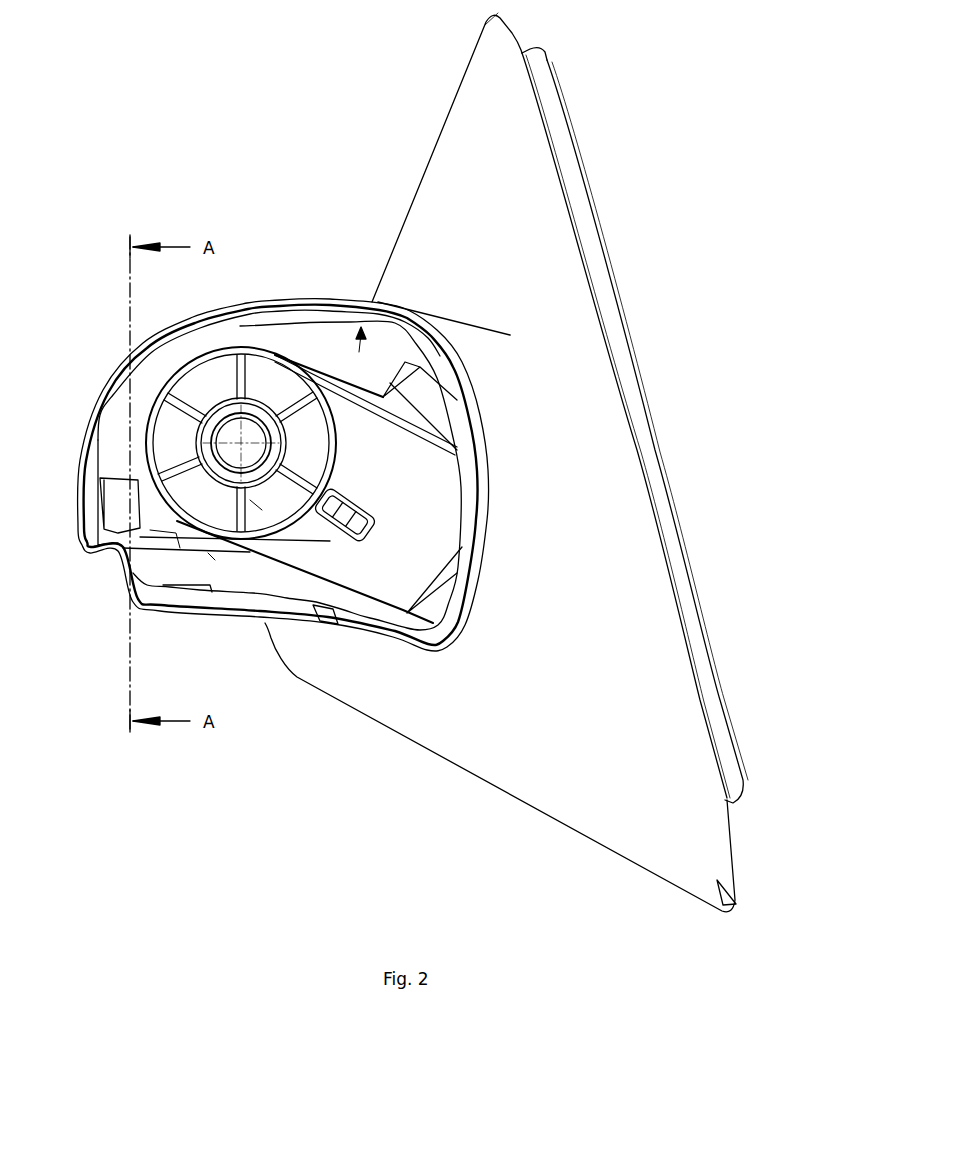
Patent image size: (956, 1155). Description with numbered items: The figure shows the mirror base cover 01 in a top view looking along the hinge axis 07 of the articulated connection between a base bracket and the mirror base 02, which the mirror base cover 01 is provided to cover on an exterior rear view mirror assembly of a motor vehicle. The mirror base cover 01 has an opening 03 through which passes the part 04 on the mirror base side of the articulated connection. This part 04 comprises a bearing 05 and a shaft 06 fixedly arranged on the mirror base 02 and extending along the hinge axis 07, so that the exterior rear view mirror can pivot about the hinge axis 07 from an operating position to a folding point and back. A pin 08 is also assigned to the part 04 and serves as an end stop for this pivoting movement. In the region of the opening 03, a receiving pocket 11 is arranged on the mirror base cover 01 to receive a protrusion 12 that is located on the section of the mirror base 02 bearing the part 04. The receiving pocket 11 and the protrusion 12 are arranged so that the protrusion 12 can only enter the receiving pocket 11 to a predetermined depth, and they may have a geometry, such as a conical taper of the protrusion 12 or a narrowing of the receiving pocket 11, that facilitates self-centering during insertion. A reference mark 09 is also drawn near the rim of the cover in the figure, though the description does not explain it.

The mirror base cover 01 is at (543, 233).
The mirror base 02 is at (395, 555).
The opening 03 is at (388, 382).
The part on the mirror base side of the articulated connection 04 is at (273, 383).
The bearing 05 is at (263, 510).
The shaft 06 is at (237, 427).
The hinge axis 07 is at (217, 470).
The pin 08 is at (338, 532).
The rim 09 is at (353, 320).
The receiving pocket 11 is at (113, 497).
The protrusion 12 is at (183, 495).